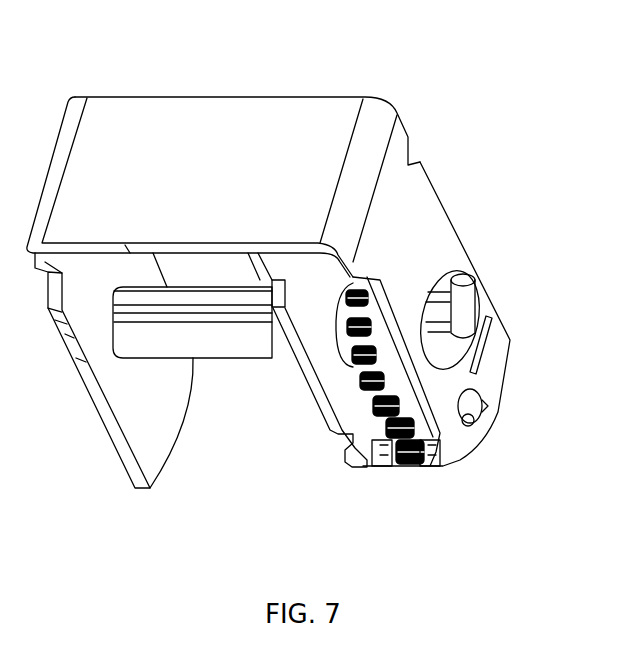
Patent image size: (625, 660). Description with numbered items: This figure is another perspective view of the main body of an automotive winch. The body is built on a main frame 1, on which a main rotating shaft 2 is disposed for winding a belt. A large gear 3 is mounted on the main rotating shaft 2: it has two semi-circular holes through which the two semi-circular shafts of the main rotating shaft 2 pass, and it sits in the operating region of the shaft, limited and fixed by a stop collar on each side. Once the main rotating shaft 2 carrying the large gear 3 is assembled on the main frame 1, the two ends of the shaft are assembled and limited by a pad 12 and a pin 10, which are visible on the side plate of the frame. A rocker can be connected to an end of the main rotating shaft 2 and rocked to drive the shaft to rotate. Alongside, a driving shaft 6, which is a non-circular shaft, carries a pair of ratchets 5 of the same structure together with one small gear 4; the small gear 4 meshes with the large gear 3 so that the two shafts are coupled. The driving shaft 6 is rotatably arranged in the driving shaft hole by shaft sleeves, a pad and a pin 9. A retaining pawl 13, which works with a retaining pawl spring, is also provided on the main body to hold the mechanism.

The main frame 1 is at (287, 125).
The main rotating shaft 2 is at (218, 345).
The large gear 3 is at (357, 353).
The small gear 4 is at (418, 468).
The ratchets 5 is at (385, 465).
The driving shaft 6 is at (485, 415).
The pin 9 is at (470, 425).
The pin 10 is at (470, 280).
The pad 12 is at (440, 268).
The retaining pawl 13 is at (478, 345).